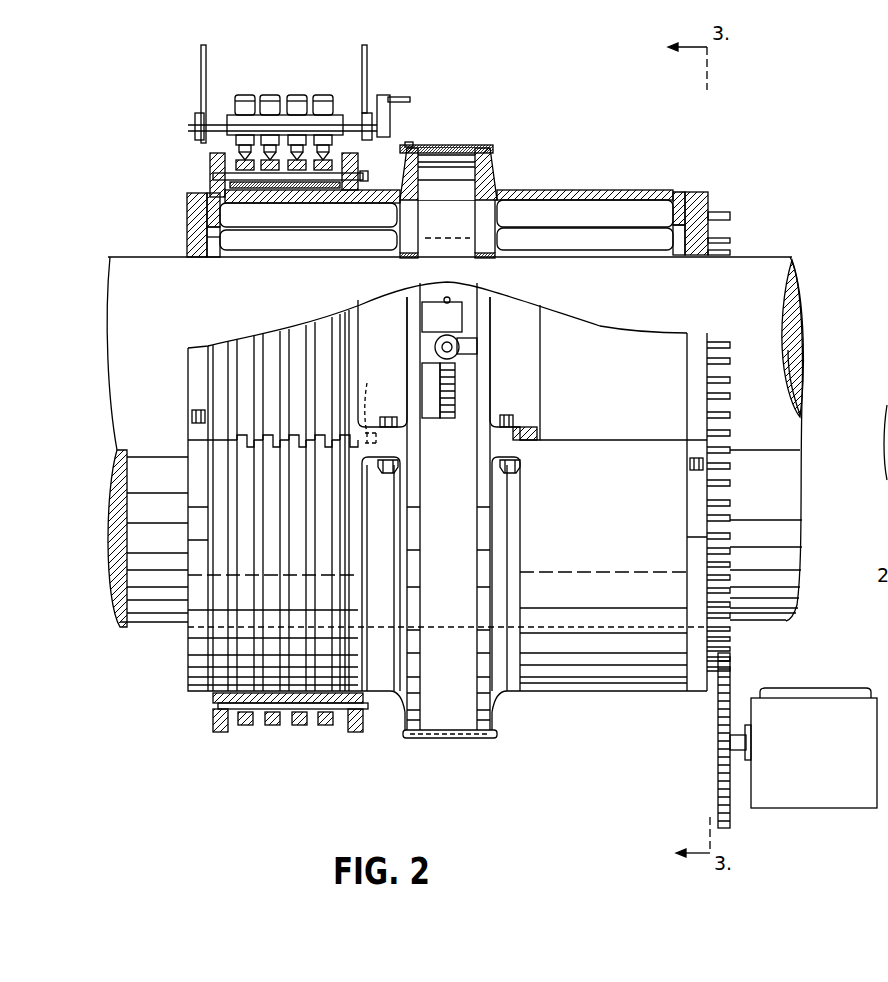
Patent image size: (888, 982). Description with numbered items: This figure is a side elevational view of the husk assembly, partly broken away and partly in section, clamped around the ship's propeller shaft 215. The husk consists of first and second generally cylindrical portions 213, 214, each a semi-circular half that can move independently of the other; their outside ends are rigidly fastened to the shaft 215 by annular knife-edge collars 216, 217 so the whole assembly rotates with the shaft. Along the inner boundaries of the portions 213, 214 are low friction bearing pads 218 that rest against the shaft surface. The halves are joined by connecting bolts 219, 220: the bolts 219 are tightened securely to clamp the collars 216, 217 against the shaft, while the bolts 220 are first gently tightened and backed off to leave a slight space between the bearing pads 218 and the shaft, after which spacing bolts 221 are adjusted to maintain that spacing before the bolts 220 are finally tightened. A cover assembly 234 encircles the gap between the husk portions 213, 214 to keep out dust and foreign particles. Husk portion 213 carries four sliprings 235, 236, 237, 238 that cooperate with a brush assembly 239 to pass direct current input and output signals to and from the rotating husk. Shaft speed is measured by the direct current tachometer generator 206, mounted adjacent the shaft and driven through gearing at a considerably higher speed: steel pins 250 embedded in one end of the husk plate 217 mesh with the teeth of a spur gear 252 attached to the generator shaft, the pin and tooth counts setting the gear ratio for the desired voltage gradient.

The direct current tachometer generator 206 is at (830, 771).
The first cylindrical portion 213 is at (378, 190).
The second cylindrical portion 214 is at (557, 190).
The ship's propeller shaft 215 is at (768, 268).
The annular knife-edge collar 216 is at (187, 201).
The annular knife-edge collar 217 is at (706, 192).
The low friction bearing pads 218 is at (404, 259).
The connecting bolts 219 is at (193, 411).
The connecting bolts 220 is at (390, 417).
The spacing bolts 221 is at (369, 384).
The cover assembly 234 is at (422, 738).
The slipring 235 is at (247, 352).
The slipring 236 is at (270, 345).
The slipring 237 is at (296, 340).
The slipring 238 is at (328, 330).
The brush assembly 239 is at (285, 91).
The steel pins 250 is at (733, 513).
The spur gear 252 is at (718, 770).